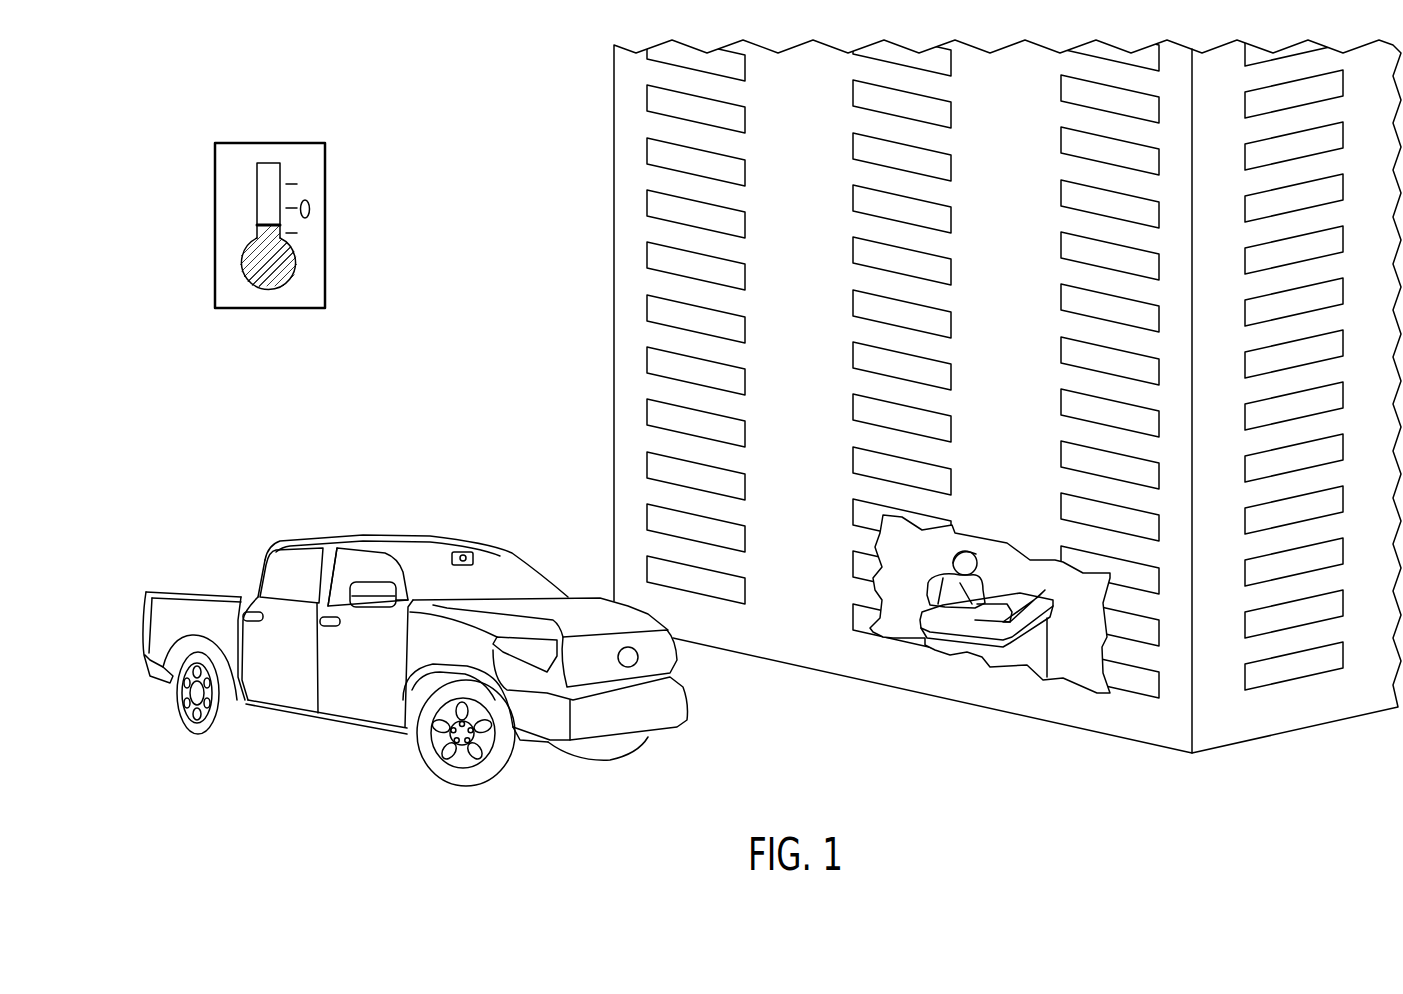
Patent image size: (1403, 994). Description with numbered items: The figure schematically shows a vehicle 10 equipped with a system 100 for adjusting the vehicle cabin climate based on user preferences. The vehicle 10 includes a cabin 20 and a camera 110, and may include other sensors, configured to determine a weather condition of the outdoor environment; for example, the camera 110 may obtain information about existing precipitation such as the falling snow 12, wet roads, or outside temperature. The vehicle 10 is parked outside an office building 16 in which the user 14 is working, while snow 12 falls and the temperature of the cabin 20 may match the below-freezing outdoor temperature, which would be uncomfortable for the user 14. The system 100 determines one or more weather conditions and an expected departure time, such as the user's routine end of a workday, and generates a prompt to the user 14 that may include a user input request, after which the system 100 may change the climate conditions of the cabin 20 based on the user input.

The vehicle 10 is at (772, 395).
The system 100 is at (415, 575).
The cabin 20 is at (415, 605).
The camera 110 is at (463, 552).
The snow 12 is at (518, 97).
The office building 16 is at (1007, 376).
The user 14 is at (905, 572).